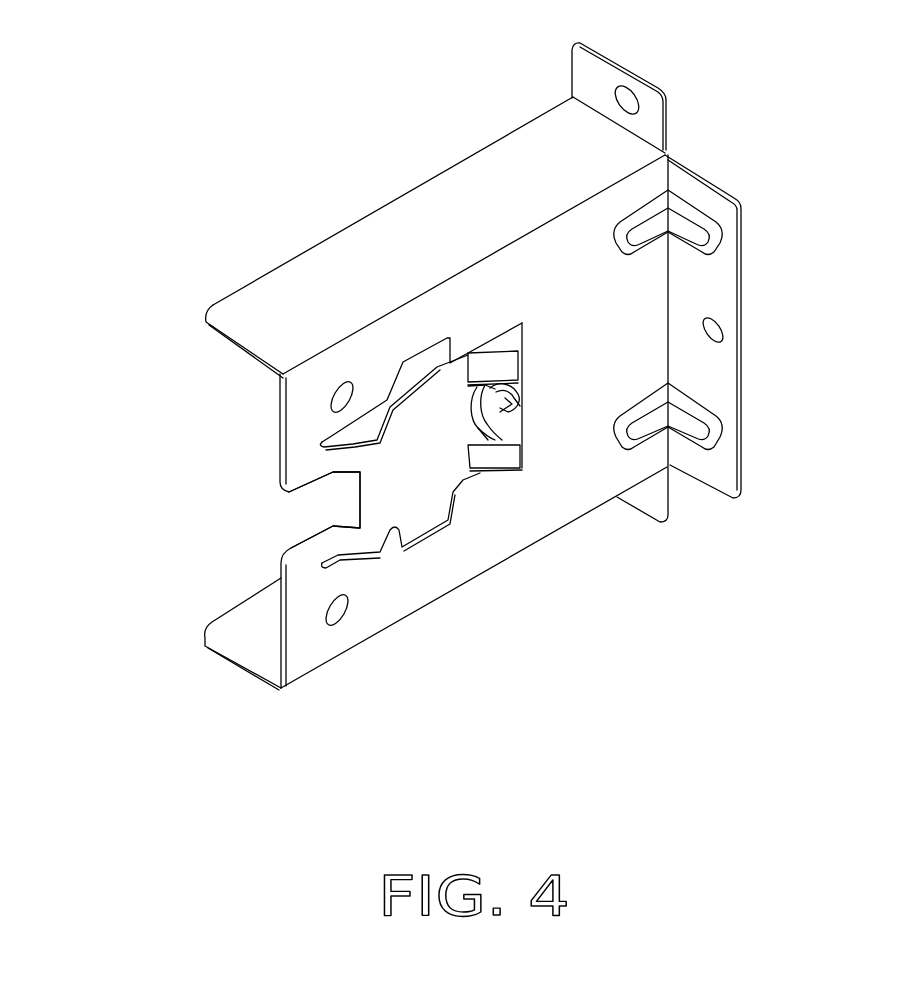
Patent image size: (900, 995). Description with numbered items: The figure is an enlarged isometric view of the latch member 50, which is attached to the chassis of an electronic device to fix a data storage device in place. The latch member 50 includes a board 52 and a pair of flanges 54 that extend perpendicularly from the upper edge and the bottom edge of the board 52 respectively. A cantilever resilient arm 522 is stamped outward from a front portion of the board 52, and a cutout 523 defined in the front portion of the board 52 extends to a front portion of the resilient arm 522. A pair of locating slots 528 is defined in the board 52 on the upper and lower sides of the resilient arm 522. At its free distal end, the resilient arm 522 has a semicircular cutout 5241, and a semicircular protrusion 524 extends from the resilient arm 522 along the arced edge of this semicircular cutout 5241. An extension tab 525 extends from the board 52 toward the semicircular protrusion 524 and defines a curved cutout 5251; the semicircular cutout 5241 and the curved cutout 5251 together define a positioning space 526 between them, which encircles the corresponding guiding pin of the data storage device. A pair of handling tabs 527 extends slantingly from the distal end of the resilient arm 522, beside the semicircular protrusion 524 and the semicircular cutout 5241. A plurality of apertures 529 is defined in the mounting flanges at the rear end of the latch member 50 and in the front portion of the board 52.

The latch member 50 is at (485, 409).
The board 52 is at (633, 287).
The flanges 54 is at (505, 170).
The cantilever resilient arm 522 is at (395, 544).
The cutout 523 is at (330, 505).
The semicircular protrusion 524 is at (492, 445).
The extension tab 525 is at (676, 519).
The positioning space 526 is at (493, 413).
The handling tabs 527 is at (500, 370).
The locating slots 528 is at (415, 525).
The apertures 529 is at (630, 100).
The semicircular cutout 5241 is at (493, 417).
The curved cutout 5251 is at (520, 407).